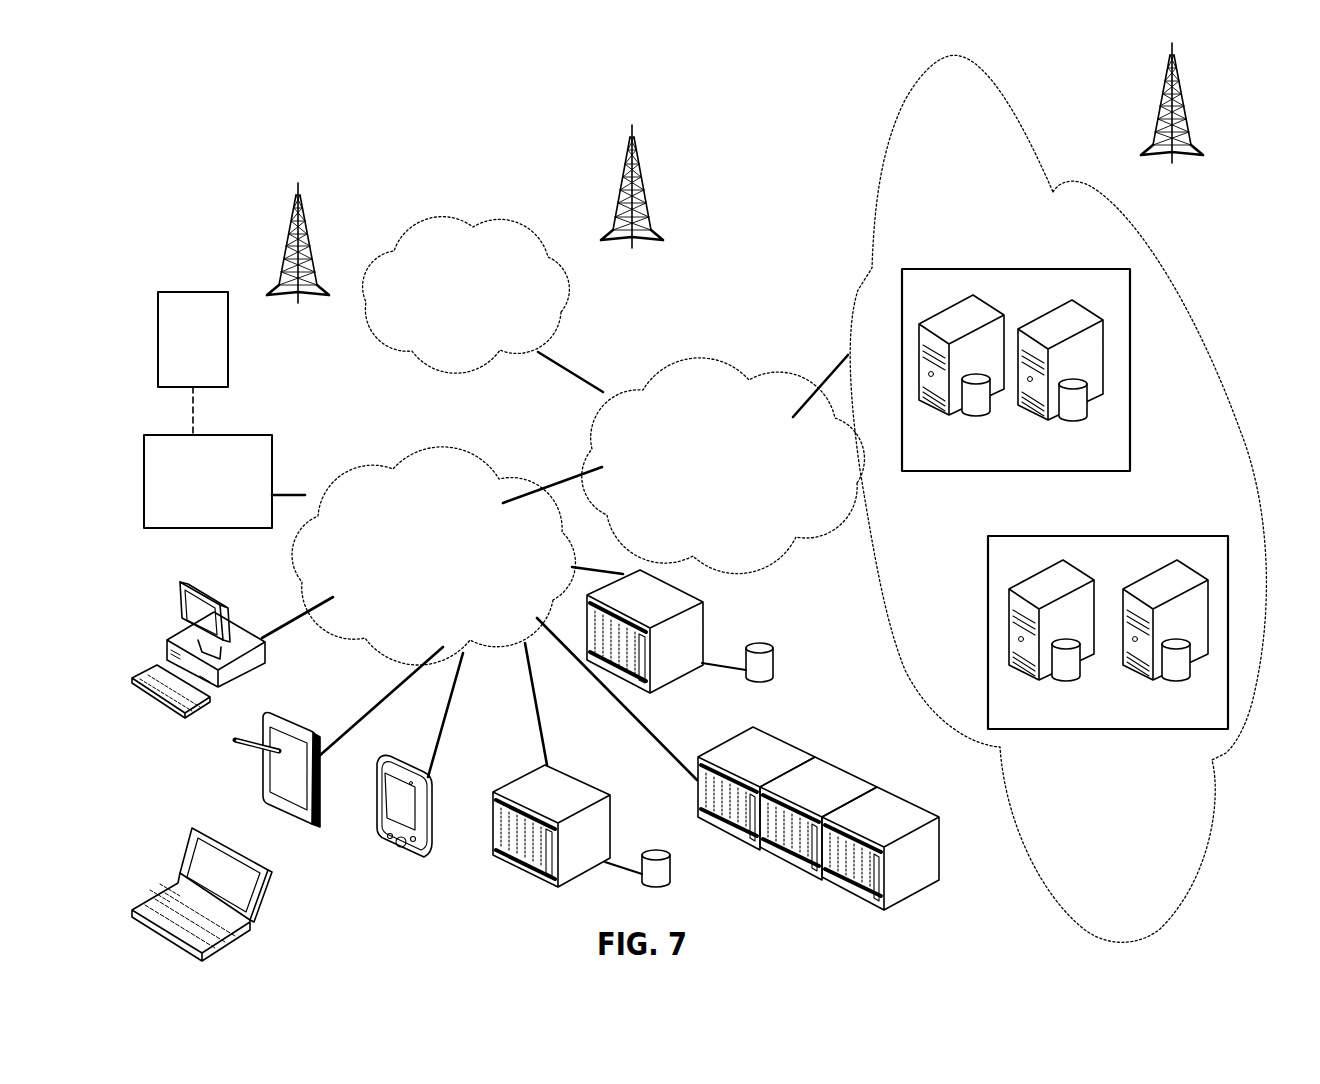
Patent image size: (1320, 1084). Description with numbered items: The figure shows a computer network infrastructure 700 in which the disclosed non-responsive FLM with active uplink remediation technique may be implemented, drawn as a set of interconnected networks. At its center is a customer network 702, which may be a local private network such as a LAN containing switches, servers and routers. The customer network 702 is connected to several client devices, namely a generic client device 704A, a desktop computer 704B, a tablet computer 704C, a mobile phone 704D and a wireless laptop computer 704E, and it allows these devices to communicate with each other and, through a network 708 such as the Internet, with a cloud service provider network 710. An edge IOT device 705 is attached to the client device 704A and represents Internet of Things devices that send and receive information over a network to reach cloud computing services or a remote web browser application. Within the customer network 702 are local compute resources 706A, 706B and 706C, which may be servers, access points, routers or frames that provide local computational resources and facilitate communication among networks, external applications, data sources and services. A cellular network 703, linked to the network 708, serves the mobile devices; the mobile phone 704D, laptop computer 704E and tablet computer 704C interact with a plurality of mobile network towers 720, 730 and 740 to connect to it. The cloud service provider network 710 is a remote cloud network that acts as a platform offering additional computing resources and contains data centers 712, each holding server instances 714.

The computer network infrastructure 700 is at (383, 155).
The customer network 702 is at (398, 467).
The cellular network 703 is at (488, 243).
The client device 704A is at (235, 435).
The desktop computer 704B is at (210, 595).
The tablet computer 704C is at (287, 718).
The mobile phone 704D is at (427, 777).
The laptop computer 704E is at (260, 877).
The edge IOT device 705 is at (173, 290).
The local compute resource 706A is at (555, 792).
The local compute resource 706B is at (705, 620).
The local compute resource 706C is at (775, 735).
The network 708 is at (658, 373).
The cloud service provider network 710 is at (1172, 267).
The data center 712 is at (945, 269).
The server instance 714 is at (971, 416).
The mobile network tower 720 is at (632, 206).
The mobile network tower 730 is at (298, 263).
The mobile network tower 740 is at (1172, 124).